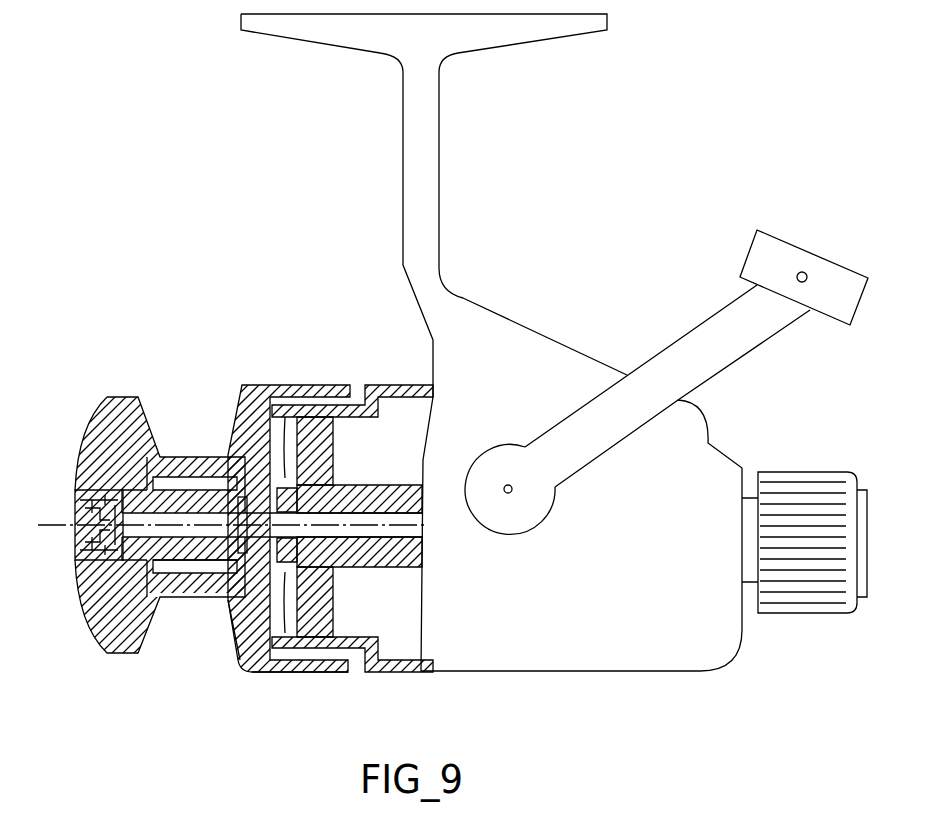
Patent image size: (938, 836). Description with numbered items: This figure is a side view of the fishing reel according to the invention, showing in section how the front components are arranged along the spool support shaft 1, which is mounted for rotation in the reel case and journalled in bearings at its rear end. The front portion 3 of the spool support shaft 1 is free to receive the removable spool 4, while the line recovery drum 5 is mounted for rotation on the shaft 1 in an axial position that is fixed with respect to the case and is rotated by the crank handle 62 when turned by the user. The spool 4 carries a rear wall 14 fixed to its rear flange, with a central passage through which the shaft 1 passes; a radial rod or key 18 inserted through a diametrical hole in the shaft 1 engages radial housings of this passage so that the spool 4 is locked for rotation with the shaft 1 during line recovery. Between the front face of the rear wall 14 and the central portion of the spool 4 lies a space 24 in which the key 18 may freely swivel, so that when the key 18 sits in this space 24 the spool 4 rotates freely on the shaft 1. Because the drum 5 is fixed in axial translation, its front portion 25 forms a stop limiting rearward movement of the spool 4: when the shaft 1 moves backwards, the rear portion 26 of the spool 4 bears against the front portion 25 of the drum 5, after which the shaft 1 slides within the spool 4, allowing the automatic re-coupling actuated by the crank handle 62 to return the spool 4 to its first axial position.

The spool support shaft 1 is at (393, 512).
The front portion of the spool support shaft 3 is at (77, 524).
The spool 4 is at (172, 452).
The line recovery drum 5 is at (374, 385).
The rear wall 14 is at (262, 422).
The radial rod or key 18 is at (242, 576).
The space 24 is at (228, 598).
The front portion of drum 25 is at (267, 652).
The rear portion of spool 26 is at (286, 472).
The crank handle 62 is at (700, 327).